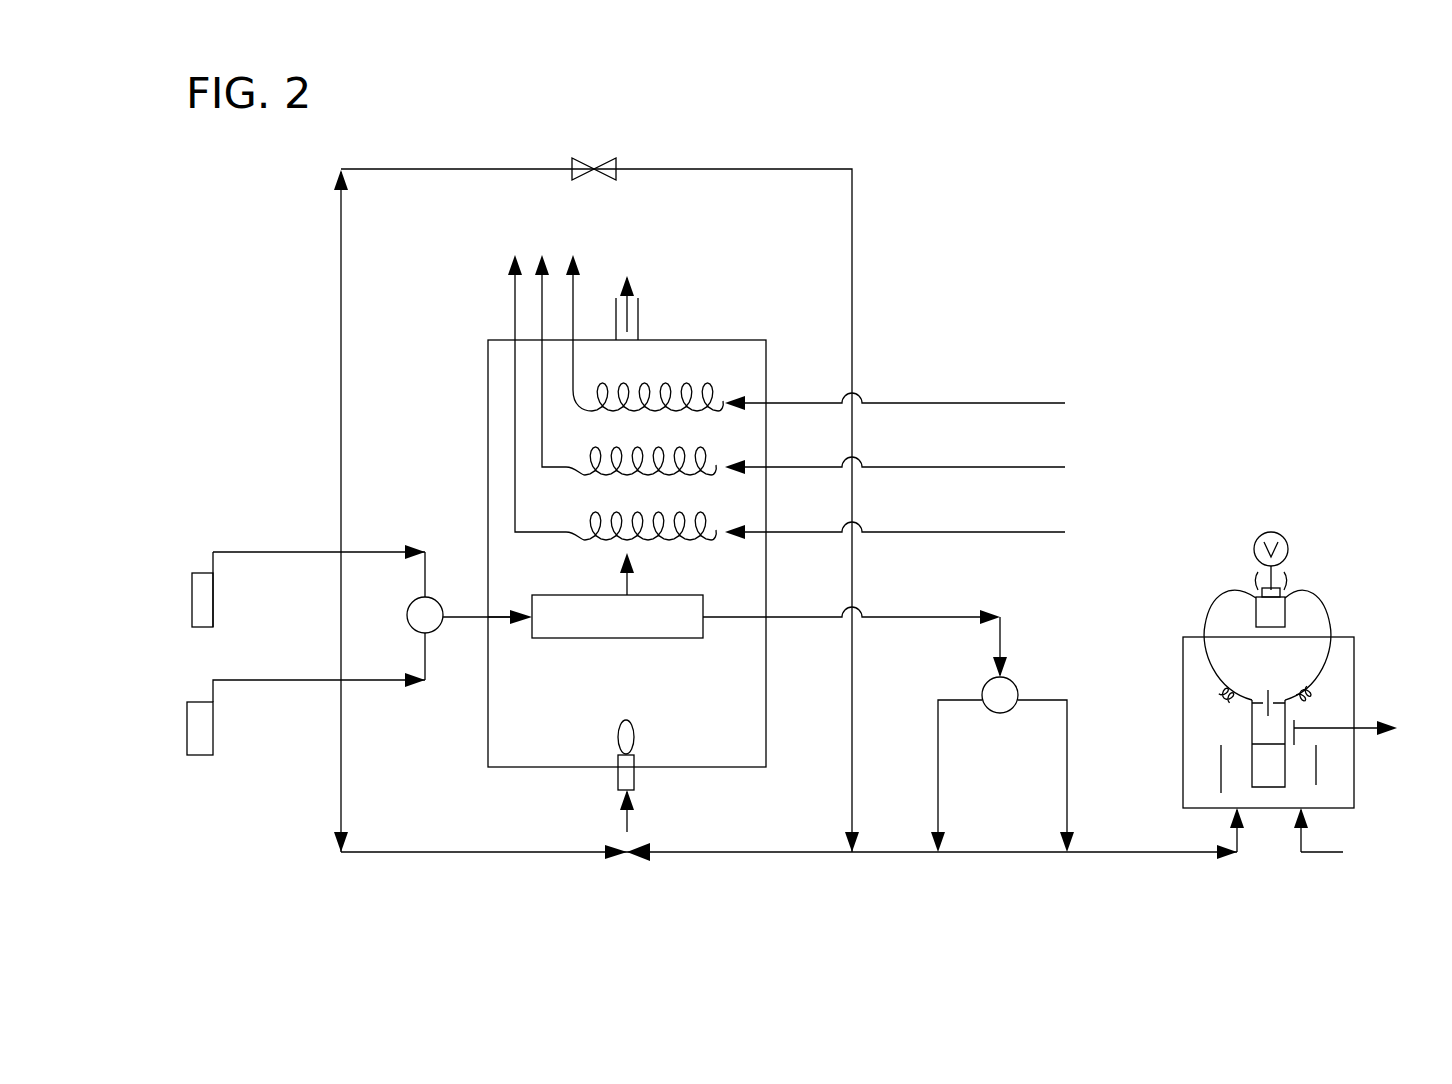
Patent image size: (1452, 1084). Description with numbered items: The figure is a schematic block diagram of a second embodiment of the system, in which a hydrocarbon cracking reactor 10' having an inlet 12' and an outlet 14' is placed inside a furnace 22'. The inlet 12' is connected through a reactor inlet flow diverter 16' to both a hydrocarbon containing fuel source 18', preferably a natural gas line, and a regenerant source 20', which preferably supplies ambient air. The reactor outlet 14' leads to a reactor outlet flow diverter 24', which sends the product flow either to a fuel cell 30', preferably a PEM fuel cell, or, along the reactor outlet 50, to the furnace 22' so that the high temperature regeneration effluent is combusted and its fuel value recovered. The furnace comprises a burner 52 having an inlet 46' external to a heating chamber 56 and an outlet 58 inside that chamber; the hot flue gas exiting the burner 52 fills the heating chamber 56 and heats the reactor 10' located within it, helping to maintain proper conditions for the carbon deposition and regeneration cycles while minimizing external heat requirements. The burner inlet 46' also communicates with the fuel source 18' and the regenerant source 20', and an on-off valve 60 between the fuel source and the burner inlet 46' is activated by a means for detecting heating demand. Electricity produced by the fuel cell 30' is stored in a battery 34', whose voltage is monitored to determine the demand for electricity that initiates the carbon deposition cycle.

The cracking reactor 10' is at (617, 644).
The reactor inlet 12' is at (528, 588).
The reactor outlet 14' is at (851, 591).
The reactor inlet flow diverter 16' is at (458, 608).
The hydrocarbon containing fuel source 18' is at (267, 717).
The regenerant source 20' is at (267, 589).
The furnace 22' is at (776, 474).
The reactor outlet flow diverter 24' is at (1024, 665).
The fuel cell 30' is at (1304, 692).
The battery 34' is at (1229, 579).
The burner inlet 46' is at (655, 829).
The reactor outlet 50 is at (938, 762).
The burner 52 is at (618, 757).
The heating chamber 56 is at (766, 675).
The burner outlet 58 is at (630, 746).
The on-off valve 60 is at (594, 160).